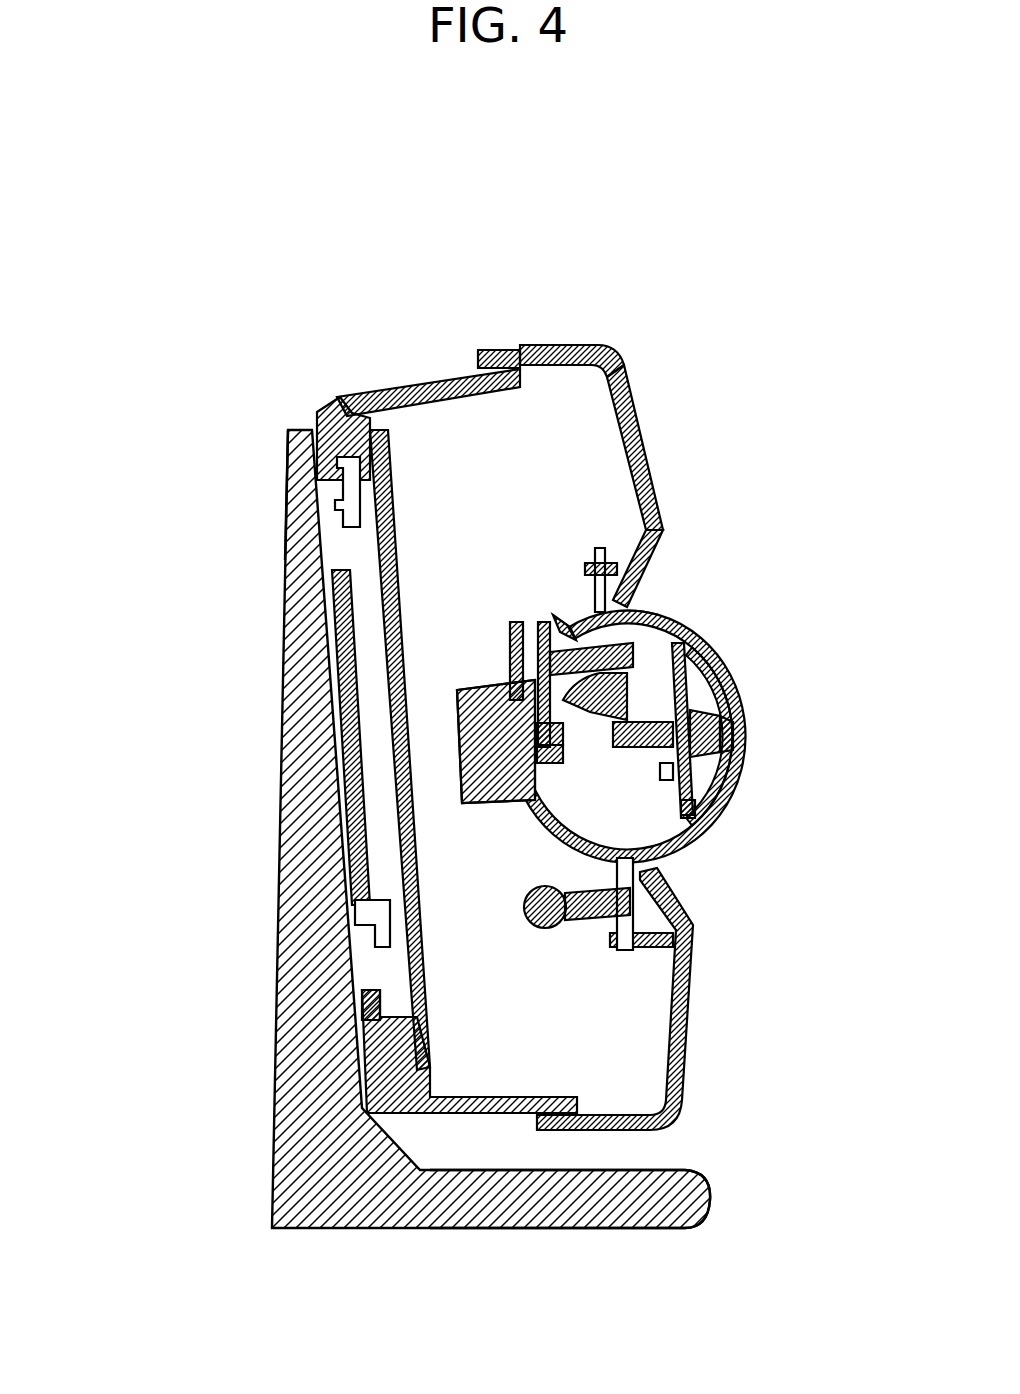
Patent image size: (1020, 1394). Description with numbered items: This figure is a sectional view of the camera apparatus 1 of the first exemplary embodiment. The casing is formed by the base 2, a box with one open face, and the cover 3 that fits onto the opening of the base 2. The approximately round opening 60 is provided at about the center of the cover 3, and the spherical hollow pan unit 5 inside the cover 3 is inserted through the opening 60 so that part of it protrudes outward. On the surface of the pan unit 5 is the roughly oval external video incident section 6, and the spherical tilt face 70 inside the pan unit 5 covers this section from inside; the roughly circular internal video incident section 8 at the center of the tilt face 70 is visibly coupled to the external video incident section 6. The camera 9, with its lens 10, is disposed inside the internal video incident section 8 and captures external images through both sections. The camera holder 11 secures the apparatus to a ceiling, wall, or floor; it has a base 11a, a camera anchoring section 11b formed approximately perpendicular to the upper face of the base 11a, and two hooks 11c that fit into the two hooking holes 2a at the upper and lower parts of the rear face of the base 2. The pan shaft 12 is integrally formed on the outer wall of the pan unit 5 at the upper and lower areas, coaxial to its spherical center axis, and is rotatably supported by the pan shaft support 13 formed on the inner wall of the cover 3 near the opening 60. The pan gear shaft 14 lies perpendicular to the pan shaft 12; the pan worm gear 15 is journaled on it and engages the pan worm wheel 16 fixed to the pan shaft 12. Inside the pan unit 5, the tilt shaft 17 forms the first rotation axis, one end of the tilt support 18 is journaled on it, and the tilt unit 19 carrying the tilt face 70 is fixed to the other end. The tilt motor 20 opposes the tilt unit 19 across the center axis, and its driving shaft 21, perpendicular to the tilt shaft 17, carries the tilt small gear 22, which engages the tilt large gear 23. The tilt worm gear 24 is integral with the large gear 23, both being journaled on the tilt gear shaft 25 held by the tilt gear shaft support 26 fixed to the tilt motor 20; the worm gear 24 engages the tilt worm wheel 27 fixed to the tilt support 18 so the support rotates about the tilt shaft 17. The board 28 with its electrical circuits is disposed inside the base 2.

The camera apparatus 1 is at (587, 320).
The base 2 is at (440, 370).
The hooking hole 2a is at (337, 557).
The cover 3 is at (633, 410).
The pan unit 5 is at (758, 660).
The external video incident section 6 is at (745, 725).
The internal video incident section 8 is at (727, 750).
The camera 9 is at (720, 747).
The lens 10 is at (738, 713).
The camera holder 11 is at (313, 1135).
The base 11a is at (690, 1200).
The camera anchoring section 11b is at (287, 480).
The hook 11c is at (333, 478).
The pan shaft 12 is at (607, 563).
The pan shaft support 13 is at (657, 530).
The pan gear shaft 14 is at (543, 925).
The pan worm gear 15 is at (585, 913).
The pan worm wheel 16 is at (590, 880).
The tilt shaft 17 is at (530, 745).
The tilt support 18 is at (707, 813).
The tilt unit 19 is at (697, 632).
The tilt motor 20 is at (565, 700).
The driving shaft 21 is at (548, 755).
The tilt small gear 22 is at (548, 780).
The tilt large gear 23 is at (543, 623).
The tilt worm gear 24 is at (567, 620).
The tilt gear shaft 25 is at (512, 660).
The tilt gear shaft support 26 is at (512, 626).
The tilt worm wheel 27 is at (550, 698).
The board 28 is at (372, 458).
The opening 60 is at (627, 603).
The tilt face 70 is at (717, 657).